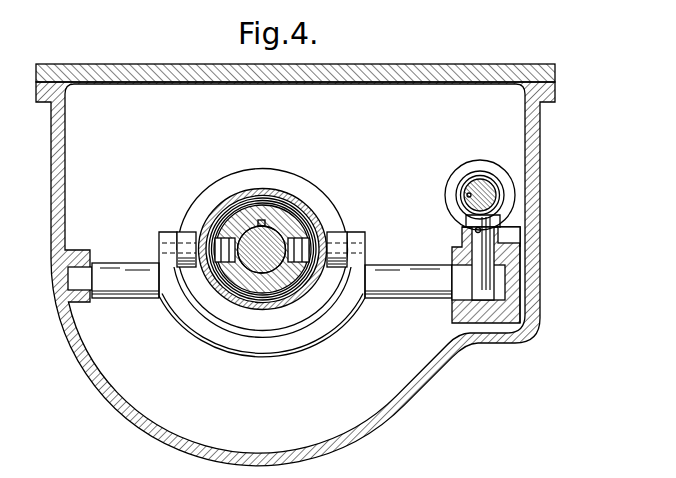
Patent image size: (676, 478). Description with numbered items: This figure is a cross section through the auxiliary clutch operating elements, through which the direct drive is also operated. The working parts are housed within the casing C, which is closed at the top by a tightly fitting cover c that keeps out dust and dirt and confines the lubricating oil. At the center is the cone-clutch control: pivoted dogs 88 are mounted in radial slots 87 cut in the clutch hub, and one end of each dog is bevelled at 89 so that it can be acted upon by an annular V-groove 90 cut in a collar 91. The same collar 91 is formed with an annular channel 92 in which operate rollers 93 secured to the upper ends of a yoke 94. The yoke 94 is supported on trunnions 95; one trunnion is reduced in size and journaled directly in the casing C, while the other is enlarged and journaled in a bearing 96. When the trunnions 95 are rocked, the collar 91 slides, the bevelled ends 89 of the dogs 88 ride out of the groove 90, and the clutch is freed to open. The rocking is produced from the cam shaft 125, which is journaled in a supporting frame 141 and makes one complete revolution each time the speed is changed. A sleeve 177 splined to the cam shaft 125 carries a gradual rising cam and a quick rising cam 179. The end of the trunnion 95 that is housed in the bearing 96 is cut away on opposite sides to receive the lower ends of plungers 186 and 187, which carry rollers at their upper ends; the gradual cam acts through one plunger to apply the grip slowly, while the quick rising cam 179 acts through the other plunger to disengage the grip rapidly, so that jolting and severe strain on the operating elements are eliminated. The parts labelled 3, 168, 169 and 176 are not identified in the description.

The casing C is at (424, 372).
The cover c is at (458, 64).
The bearing bracket band 3 is at (312, 348).
The radial slots 87 is at (305, 233).
The pivoted dogs 88 is at (220, 282).
The bevelled end 89 is at (333, 237).
The annular V-groove 90 is at (270, 203).
The collar 91 is at (258, 312).
The annular channel 92 is at (241, 322).
The rollers 93 is at (188, 236).
The yoke 94 is at (292, 214).
The trunnions 95 is at (140, 285).
The bearing 96 is at (452, 314).
The cam shaft 125 is at (489, 197).
The supporting frame 141 is at (508, 253).
The slot 168 is at (503, 231).
The bracket wall 169 is at (564, 269).
The roller ring 176 is at (500, 200).
The sleeve 177 is at (470, 172).
The quick rising cam 179 is at (485, 185).
The plunger 186 is at (477, 257).
The plunger 187 is at (469, 224).